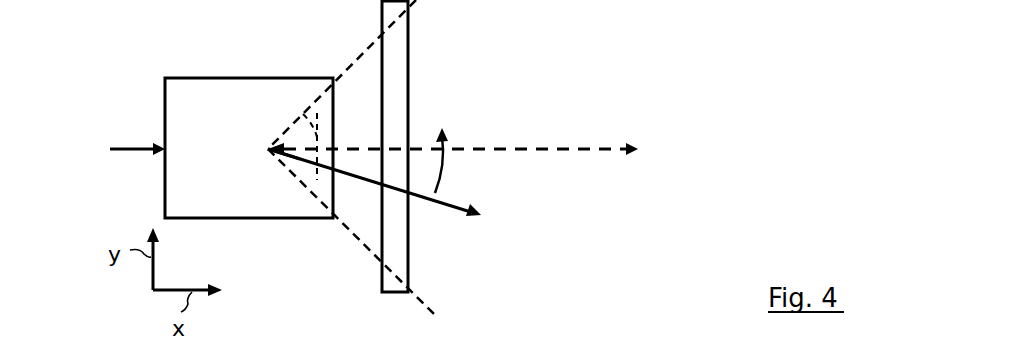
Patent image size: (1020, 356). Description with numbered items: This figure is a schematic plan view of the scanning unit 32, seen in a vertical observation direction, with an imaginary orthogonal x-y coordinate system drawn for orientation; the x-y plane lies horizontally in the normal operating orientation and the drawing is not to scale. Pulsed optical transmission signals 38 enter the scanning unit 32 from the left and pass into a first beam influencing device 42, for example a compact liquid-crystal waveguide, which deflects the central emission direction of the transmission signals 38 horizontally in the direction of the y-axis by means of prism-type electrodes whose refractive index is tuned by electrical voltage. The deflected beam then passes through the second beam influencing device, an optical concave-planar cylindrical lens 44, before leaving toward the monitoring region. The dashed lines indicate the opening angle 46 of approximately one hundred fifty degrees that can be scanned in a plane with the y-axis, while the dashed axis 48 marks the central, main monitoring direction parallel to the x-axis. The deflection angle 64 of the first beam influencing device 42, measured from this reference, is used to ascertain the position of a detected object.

The scanning unit 32 is at (196, 56).
The transmission signals 38 is at (140, 147).
The first beam influencing device 42 is at (281, 97).
The optical concave-planar cylindrical lens 44 is at (398, 85).
The opening angle 46 is at (314, 131).
The optical axis 48 is at (618, 152).
The deflection angle 64 is at (292, 165).